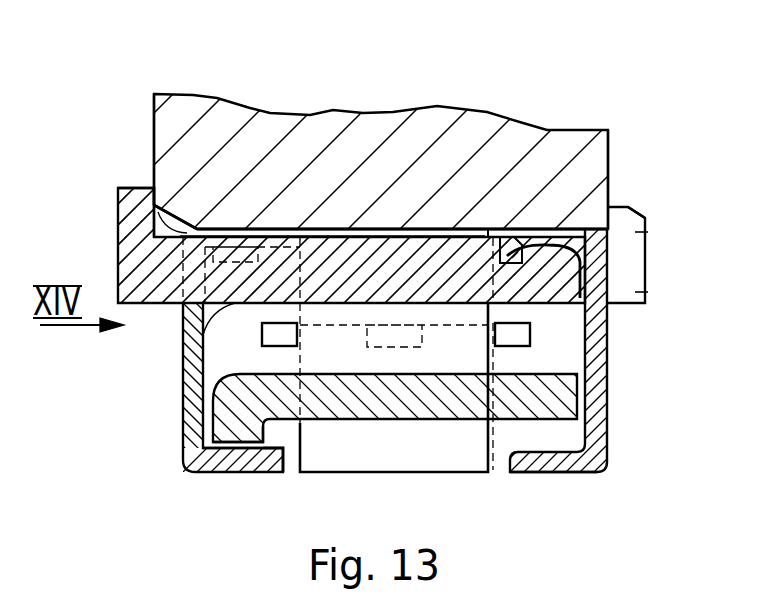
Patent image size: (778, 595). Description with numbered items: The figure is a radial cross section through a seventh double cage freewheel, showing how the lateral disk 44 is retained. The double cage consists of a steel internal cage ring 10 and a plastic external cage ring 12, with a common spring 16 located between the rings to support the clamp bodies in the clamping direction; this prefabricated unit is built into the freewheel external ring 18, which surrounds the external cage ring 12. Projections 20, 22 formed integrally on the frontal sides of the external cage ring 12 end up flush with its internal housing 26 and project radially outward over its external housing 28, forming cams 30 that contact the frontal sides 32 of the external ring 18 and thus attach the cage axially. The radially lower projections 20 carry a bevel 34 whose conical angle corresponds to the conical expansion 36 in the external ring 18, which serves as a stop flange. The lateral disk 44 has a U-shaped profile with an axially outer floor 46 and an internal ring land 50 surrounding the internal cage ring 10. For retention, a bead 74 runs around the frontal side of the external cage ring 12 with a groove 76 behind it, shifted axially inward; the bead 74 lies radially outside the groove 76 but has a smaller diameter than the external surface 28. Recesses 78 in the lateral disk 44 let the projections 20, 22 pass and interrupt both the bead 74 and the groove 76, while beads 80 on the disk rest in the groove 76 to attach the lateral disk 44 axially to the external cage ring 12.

The internal cage ring 10 is at (253, 398).
The external cage ring 12 is at (263, 335).
The spring 16 is at (185, 390).
The freewheel external ring 18 is at (278, 122).
The projection 20 is at (648, 292).
The projection 22 is at (130, 250).
The internal housing 26 is at (522, 266).
The external housing 28 is at (352, 232).
The cam 30 is at (118, 203).
The frontal side 32 is at (154, 138).
The bevel 34 is at (638, 212).
The conical expansion 36 is at (170, 205).
The lateral disk 44 is at (185, 472).
The floor 46 is at (203, 408).
The internal ring land 50 is at (263, 452).
The bead 74 is at (560, 235).
The groove 76 is at (512, 258).
The recess 78 is at (183, 306).
The bead 80 is at (523, 231).